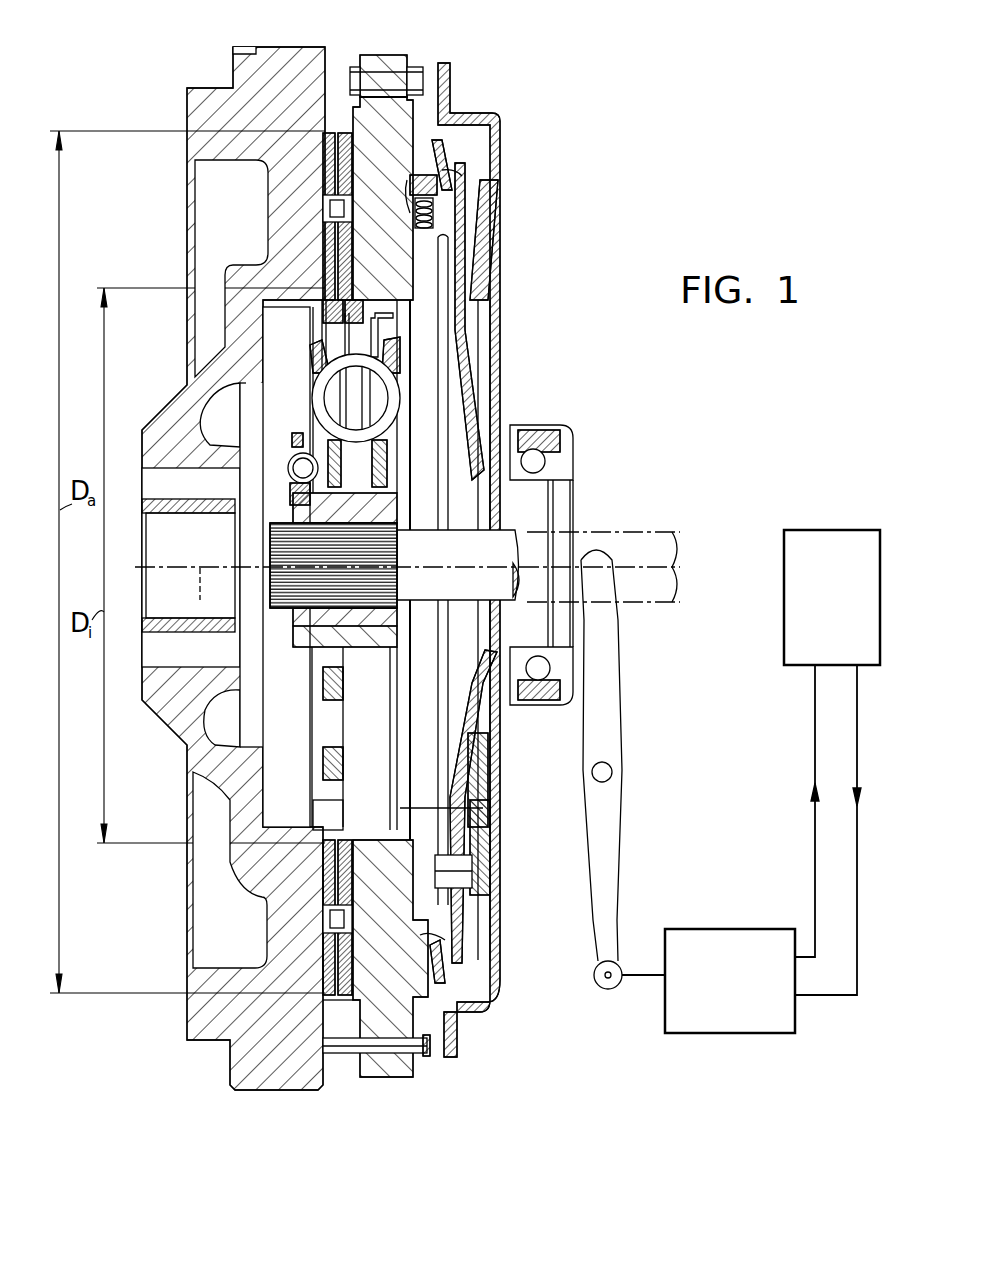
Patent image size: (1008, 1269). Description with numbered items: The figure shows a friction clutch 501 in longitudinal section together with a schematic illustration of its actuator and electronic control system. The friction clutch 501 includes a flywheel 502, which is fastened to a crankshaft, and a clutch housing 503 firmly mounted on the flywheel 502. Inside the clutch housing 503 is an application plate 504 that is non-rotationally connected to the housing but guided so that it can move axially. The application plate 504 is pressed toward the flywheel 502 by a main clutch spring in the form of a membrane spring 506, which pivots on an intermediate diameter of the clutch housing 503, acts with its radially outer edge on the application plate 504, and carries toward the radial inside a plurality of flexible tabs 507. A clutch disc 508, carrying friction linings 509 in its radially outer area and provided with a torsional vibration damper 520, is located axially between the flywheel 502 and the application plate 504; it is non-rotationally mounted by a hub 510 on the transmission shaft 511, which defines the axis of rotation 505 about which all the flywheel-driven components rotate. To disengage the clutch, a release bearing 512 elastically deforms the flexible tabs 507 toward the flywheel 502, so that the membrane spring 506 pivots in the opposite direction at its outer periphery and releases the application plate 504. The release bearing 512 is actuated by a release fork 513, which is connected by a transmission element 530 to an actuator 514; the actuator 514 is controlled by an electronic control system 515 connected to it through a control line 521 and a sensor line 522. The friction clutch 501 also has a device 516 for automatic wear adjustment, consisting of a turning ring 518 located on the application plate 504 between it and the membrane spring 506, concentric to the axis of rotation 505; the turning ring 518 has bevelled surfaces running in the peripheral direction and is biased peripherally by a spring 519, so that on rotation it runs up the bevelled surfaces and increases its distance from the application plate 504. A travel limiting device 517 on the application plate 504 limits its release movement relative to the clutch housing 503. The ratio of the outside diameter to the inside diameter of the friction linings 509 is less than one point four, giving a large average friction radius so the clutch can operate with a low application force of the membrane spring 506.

The friction clutch 501 is at (570, 152).
The flywheel 502 is at (240, 47).
The clutch housing 503 is at (478, 210).
The application plate 504 is at (398, 60).
The axis of rotation 505 is at (176, 592).
The membrane spring 506 is at (463, 177).
The flexible tabs 507 is at (463, 393).
The clutch disc 508 is at (298, 730).
The friction linings 509 is at (430, 812).
The hub 510 is at (306, 632).
The transmission shaft 511 is at (503, 542).
The release bearing 512 is at (575, 428).
The release fork 513 is at (607, 675).
The actuator 514 is at (748, 1027).
The electronic control system 515 is at (832, 532).
The device for automatic wear adjustment 516 is at (462, 142).
The travel limiting device 517 is at (436, 1054).
The turning ring 518 is at (452, 973).
The spring 519 is at (455, 256).
The torsional vibration damper 520 is at (295, 388).
The control line 521 is at (857, 843).
The sensor line 522 is at (813, 726).
The transmission element 530 is at (645, 980).